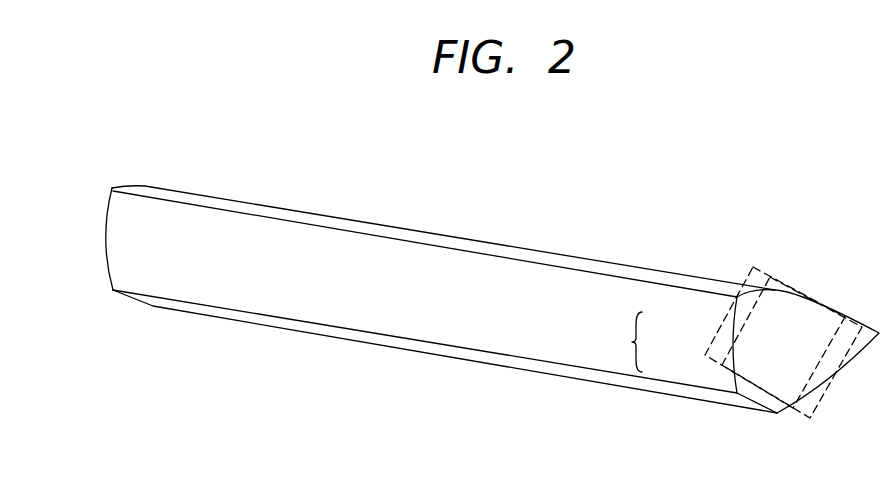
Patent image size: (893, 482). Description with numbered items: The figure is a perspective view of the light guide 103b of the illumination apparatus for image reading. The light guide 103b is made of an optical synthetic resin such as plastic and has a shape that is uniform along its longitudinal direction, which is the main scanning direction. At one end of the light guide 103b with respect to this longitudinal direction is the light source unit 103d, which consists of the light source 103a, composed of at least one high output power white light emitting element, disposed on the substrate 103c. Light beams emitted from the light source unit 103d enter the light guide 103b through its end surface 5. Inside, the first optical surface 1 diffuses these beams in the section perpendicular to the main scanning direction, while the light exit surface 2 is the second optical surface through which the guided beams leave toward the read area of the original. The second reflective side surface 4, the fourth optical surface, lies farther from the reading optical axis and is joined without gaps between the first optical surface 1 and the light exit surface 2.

The first optical surface 1 is at (442, 350).
The light exit surface 2 is at (513, 247).
The second reflective side surface 4 is at (260, 233).
The end surface 5 is at (748, 302).
The light source 103a is at (770, 328).
The light guide 103b is at (449, 123).
The substrate 103c is at (743, 368).
The light source unit 103d is at (612, 342).